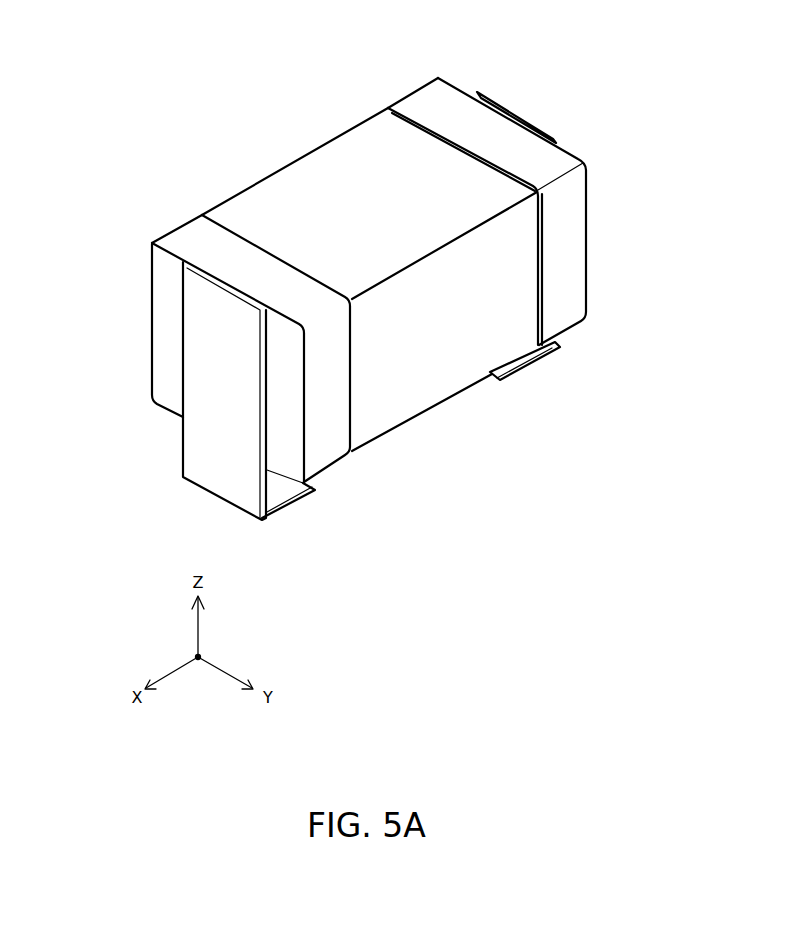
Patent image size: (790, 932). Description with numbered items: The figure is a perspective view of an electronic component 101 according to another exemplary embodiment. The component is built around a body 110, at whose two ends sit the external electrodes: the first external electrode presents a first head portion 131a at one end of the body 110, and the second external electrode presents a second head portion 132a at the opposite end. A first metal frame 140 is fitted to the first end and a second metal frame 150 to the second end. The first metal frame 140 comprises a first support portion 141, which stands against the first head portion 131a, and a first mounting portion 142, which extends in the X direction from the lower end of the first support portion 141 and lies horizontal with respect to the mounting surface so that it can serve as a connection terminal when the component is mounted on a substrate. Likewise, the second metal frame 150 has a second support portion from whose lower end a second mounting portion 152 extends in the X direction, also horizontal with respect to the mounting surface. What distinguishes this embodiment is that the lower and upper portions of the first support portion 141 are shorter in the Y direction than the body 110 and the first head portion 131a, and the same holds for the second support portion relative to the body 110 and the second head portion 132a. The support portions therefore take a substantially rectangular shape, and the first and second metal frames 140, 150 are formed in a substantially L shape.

The electronic component 101 is at (201, 40).
The body 110 is at (305, 181).
The first head portion 131a is at (297, 456).
The second head portion 132a is at (588, 248).
The first metal frame 140 is at (200, 407).
The first support portion 141 is at (200, 380).
The first mounting portion 142 is at (284, 490).
The second metal frame 150 is at (534, 233).
The second mounting portion 152 is at (518, 360).